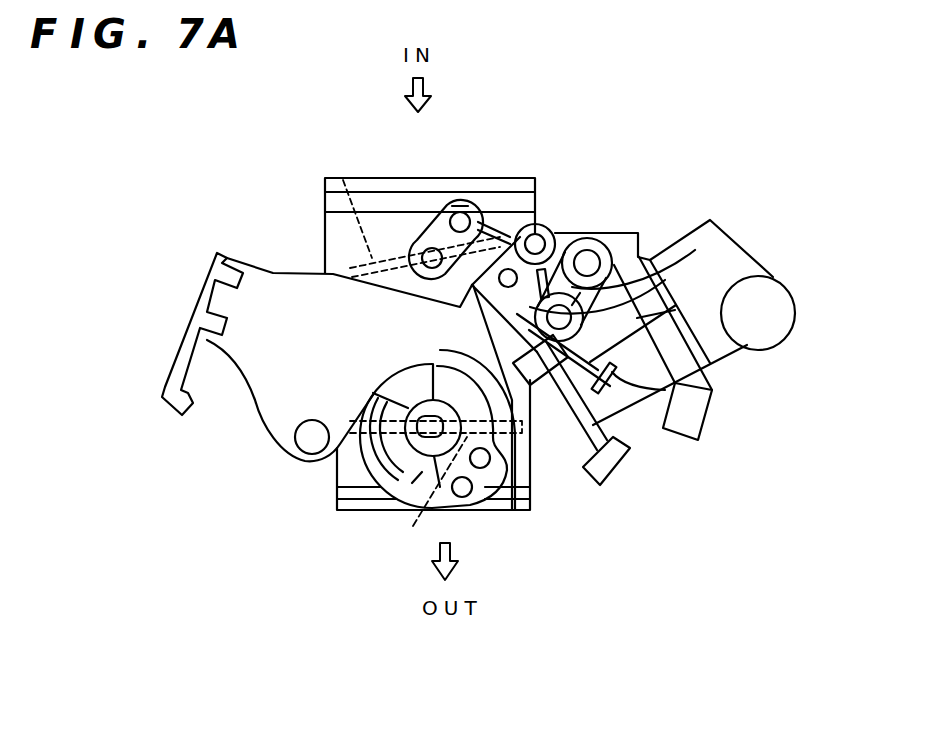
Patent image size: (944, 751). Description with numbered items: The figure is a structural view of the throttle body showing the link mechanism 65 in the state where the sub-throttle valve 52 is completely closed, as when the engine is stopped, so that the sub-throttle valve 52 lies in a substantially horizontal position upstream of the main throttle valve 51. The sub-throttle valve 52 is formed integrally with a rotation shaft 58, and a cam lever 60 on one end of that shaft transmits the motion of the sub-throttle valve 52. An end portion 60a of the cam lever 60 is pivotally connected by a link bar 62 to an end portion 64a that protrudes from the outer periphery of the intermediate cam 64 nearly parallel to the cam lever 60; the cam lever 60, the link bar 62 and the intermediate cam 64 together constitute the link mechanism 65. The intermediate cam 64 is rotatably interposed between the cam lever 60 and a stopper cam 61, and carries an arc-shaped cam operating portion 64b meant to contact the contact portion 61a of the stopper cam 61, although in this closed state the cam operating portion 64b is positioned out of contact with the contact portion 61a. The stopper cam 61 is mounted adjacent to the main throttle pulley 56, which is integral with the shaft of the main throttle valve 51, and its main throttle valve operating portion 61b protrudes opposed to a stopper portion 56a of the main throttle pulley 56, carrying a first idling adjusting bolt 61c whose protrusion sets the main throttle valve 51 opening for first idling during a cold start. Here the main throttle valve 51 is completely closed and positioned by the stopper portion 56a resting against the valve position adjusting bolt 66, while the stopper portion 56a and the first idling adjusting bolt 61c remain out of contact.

The main throttle valve 51 is at (432, 504).
The sub-throttle valve 52 is at (340, 178).
The main throttle pulley 56 is at (420, 472).
The stopper portion 56a is at (515, 497).
The rotation shaft 58 is at (418, 228).
The cam lever 60 is at (430, 255).
The end portion 60a is at (459, 202).
The stopper cam 61 is at (600, 247).
The contact portion 61a is at (572, 282).
The main throttle valve operating portion 61b is at (612, 420).
The first idling adjusting bolt 61c is at (710, 413).
The link bar 62 is at (511, 217).
The intermediate cam 64 is at (536, 220).
The end portion 64a is at (545, 228).
The cam operating portion 64b is at (710, 223).
The link mechanism 65 is at (492, 205).
The valve position adjusting bolt 66 is at (577, 445).